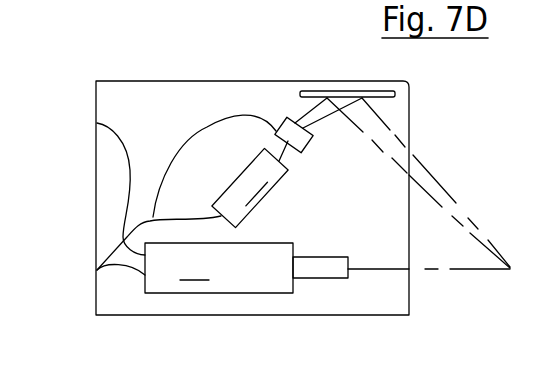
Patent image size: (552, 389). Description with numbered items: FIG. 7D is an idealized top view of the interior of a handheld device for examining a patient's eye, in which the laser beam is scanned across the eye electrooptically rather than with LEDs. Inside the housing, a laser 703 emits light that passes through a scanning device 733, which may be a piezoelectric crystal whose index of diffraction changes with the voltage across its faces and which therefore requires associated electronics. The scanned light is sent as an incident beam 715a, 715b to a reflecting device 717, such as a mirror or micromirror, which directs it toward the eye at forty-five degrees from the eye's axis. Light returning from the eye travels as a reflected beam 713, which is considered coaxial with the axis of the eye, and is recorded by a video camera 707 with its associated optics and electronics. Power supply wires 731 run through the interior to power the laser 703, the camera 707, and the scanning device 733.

The laser 703 is at (250, 187).
The video camera 707 is at (246, 268).
The reflected beam 713 is at (430, 302).
The incident beam 715a is at (438, 183).
The incident beam 715b is at (449, 182).
The reflecting device 717 is at (365, 77).
The power supply wires 731 is at (148, 195).
The scanning device 733 is at (252, 109).